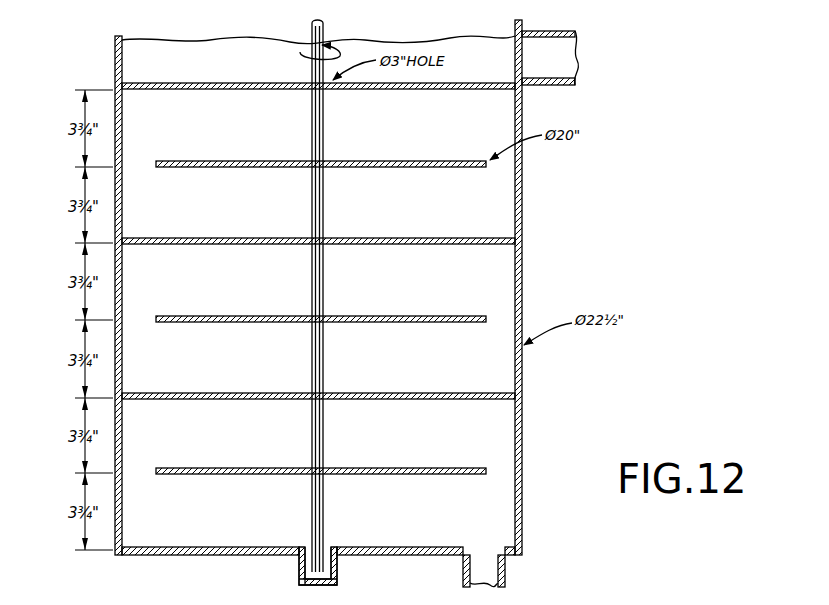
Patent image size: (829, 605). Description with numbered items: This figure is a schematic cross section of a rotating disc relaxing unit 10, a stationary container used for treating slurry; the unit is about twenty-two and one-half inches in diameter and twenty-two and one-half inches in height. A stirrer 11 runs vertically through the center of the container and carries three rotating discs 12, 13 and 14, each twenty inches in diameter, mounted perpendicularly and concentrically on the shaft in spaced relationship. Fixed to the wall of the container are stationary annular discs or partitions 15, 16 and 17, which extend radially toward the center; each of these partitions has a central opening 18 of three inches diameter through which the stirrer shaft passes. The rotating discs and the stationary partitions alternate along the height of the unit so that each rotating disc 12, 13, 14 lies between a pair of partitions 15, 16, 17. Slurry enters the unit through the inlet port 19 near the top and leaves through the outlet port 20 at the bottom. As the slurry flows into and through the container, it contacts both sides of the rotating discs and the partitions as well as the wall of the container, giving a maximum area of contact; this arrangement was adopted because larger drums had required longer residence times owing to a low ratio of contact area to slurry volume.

The relaxing unit 10 is at (522, 208).
The stirrer 11 is at (305, 36).
The disc 12 is at (250, 167).
The disc 13 is at (250, 322).
The disc 14 is at (258, 474).
The stationary annular disc or partition 15 is at (410, 89).
The stationary annular disc or partition 16 is at (425, 244).
The stationary annular disc or partition 17 is at (425, 399).
The central opening 18 is at (332, 237).
The inlet port 19 is at (578, 47).
The outlet port 20 is at (490, 566).